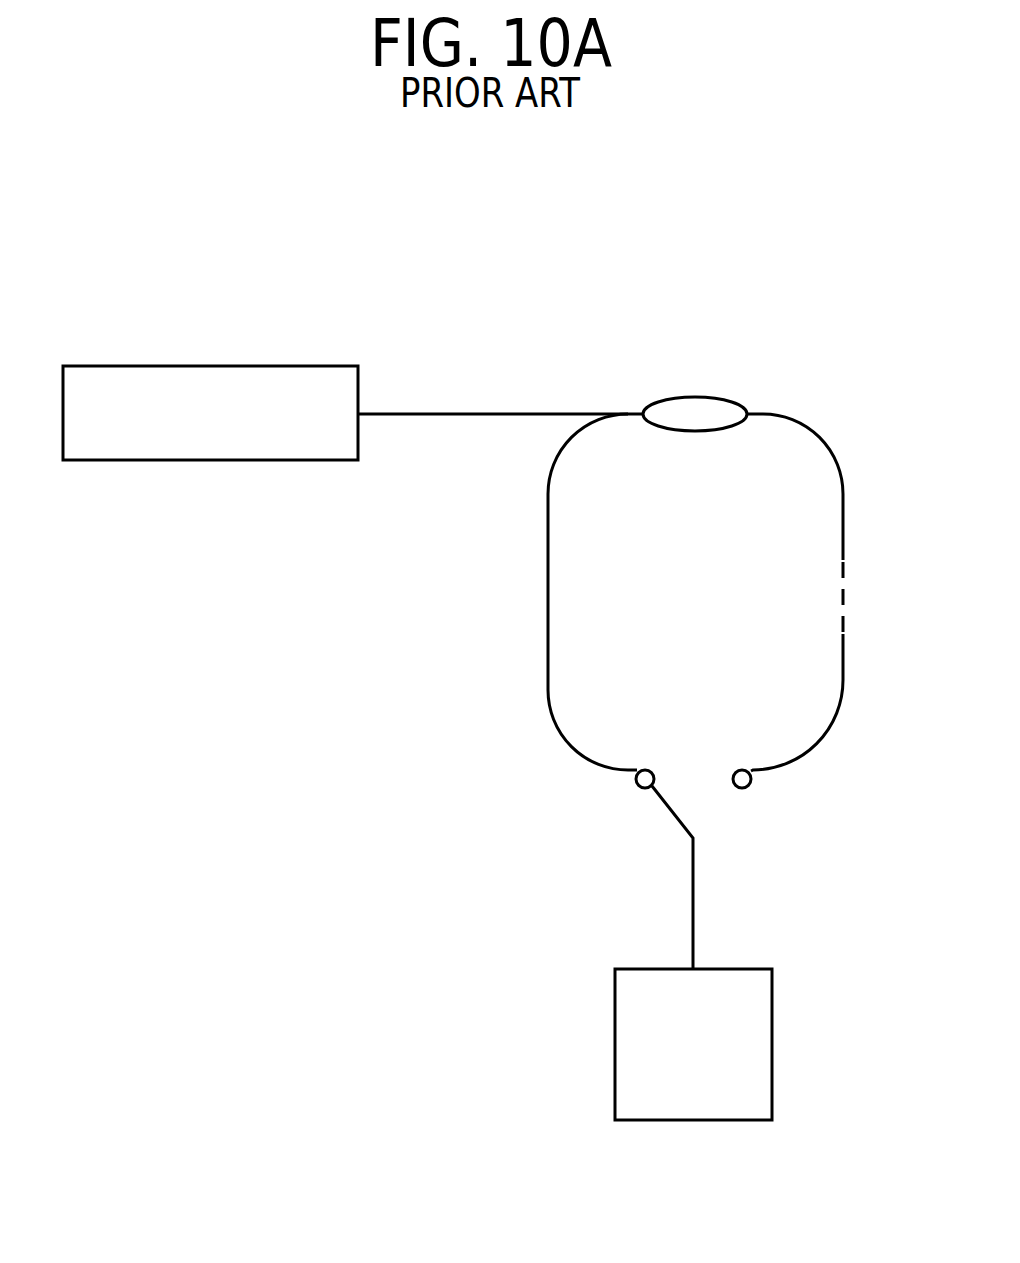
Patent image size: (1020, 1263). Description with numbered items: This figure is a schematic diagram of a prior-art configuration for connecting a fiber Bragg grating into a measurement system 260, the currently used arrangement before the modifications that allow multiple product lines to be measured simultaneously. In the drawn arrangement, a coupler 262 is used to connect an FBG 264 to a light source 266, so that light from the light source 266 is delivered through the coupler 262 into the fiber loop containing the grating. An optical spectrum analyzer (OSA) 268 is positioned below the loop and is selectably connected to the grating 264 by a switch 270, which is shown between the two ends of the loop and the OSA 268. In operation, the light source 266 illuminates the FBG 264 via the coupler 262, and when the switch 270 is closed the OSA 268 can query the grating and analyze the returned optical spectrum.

The measurement system 260 is at (506, 237).
The coupler 262 is at (695, 397).
The FBG 264 is at (846, 578).
The light source 266 is at (203, 366).
The optical spectrum analyzer (OSA) 268 is at (773, 1043).
The switch 270 is at (670, 812).